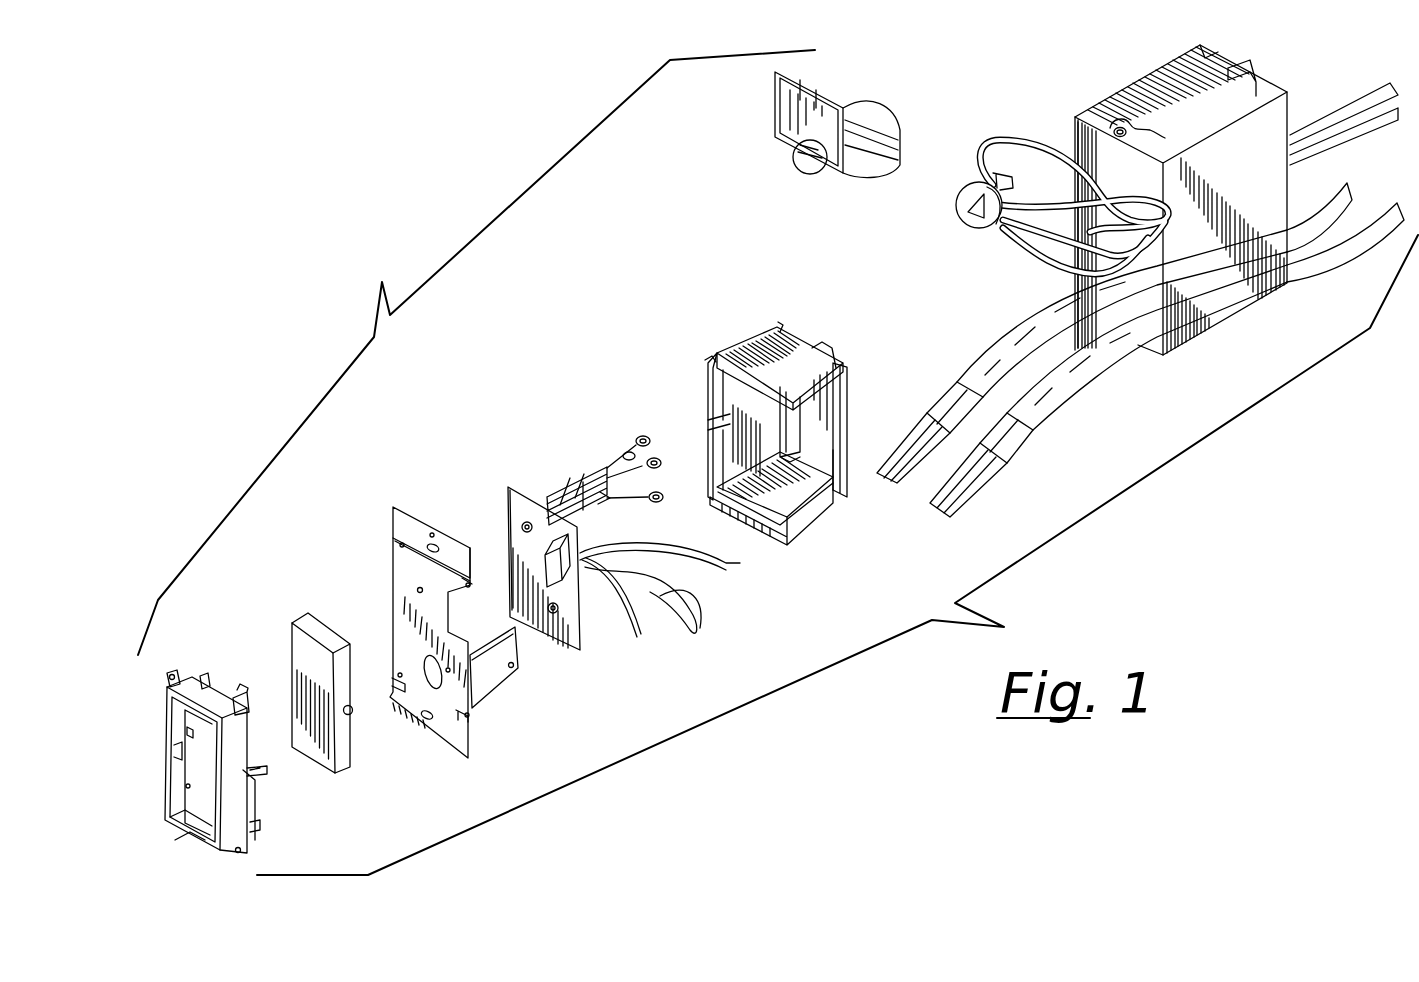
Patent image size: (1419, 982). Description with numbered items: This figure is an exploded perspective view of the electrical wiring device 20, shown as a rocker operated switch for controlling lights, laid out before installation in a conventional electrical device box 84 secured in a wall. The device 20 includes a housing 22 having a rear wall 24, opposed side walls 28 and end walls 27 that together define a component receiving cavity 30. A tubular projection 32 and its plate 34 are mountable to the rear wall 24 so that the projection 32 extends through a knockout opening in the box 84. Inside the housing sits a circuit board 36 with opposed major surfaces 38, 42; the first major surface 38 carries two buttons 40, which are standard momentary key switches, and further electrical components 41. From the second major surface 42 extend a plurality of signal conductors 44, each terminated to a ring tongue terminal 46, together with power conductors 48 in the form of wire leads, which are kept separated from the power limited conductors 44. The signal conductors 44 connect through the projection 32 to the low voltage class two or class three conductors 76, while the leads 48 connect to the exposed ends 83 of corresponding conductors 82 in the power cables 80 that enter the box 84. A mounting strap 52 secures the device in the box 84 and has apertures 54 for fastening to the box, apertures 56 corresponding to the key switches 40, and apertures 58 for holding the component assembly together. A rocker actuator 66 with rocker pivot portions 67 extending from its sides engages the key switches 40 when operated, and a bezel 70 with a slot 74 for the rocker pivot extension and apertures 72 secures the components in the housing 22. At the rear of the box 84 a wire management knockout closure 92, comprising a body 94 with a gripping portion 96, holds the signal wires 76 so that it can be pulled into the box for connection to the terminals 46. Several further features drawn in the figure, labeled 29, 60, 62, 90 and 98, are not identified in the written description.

The electrical wiring device 20 is at (778, 462).
The housing 22 is at (748, 312).
The rear wall 24 is at (857, 415).
The end walls 27 is at (803, 355).
The side walls 28 is at (840, 500).
The bottom wall 29 is at (813, 510).
The component receiving cavity 30 is at (760, 515).
The tubular projection 32 is at (892, 92).
The plate 34 is at (776, 98).
The circuit board 36 is at (518, 478).
The first major surface 38 is at (520, 500).
The buttons 40 is at (523, 532).
The electrical components 41 is at (557, 552).
The second major surface 42 is at (582, 523).
The signal conductors 44 is at (590, 470).
The ring tongue terminal 46 is at (640, 436).
The power conductors 48 is at (665, 580).
The mounting strap 52 is at (392, 502).
The apertures 54 is at (428, 720).
The apertures 56 is at (417, 590).
The apertures 58 is at (470, 588).
The bracket plate 60 is at (497, 670).
The plate hole 62 is at (515, 667).
The rocker actuator 66 is at (290, 630).
The rocker pivot portion 67 is at (352, 712).
The bezel 70 is at (198, 678).
The apertures 72 is at (246, 716).
The slot 74 is at (180, 768).
The power limited conductors 76 is at (1332, 130).
The power cables 80 is at (1348, 176).
The power conductors 82 is at (1030, 440).
The exposed ends 83 is at (950, 505).
The electrical device box 84 is at (1130, 72).
The box hole 90 is at (1128, 126).
The wire management knockout closure 92 is at (950, 180).
The body 94 is at (952, 195).
The portion 96 is at (975, 215).
The connector wires 98 is at (1015, 172).